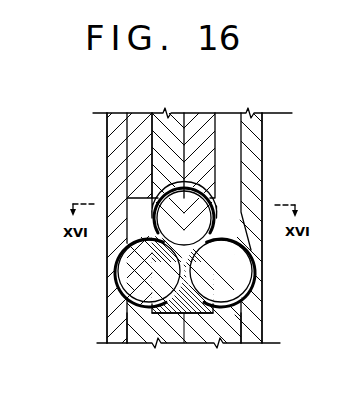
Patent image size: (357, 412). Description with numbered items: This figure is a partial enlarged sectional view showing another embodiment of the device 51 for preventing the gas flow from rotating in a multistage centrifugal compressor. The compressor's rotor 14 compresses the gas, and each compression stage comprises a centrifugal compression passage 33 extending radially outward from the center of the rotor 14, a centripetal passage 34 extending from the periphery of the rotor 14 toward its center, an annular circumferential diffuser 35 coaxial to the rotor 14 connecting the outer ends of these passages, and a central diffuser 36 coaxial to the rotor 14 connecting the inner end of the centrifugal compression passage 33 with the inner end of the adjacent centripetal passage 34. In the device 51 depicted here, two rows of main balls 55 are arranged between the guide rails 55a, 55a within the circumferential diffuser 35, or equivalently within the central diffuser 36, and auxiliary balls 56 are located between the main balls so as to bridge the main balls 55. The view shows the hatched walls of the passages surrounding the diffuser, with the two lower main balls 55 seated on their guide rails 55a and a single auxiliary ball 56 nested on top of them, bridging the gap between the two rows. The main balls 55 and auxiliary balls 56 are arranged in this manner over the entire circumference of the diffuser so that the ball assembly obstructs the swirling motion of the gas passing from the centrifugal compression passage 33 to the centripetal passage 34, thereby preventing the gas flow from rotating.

The rotor 14 is at (103, 109).
The centrifugal compression passage 33 is at (232, 142).
The centripetal passage 34 is at (140, 152).
The circumferential diffuser 35 is at (165, 299).
The central diffuser 36 is at (181, 343).
The device for preventing rotation of the gas flow 51 is at (242, 308).
The main balls 55 is at (140, 271).
The guide rails 55a is at (168, 190).
The auxiliary balls 56 is at (218, 204).